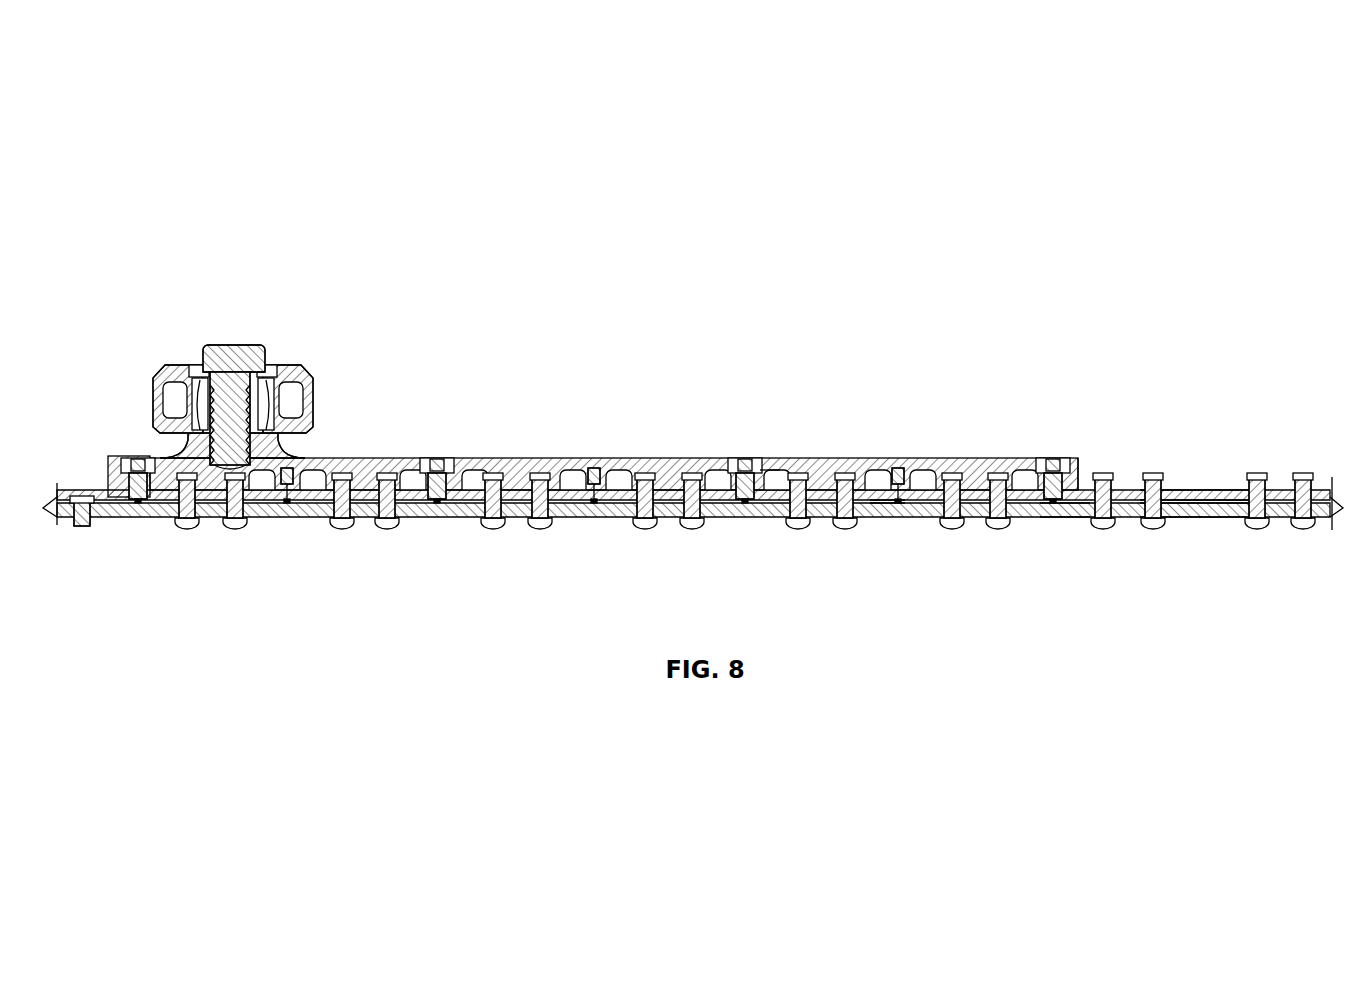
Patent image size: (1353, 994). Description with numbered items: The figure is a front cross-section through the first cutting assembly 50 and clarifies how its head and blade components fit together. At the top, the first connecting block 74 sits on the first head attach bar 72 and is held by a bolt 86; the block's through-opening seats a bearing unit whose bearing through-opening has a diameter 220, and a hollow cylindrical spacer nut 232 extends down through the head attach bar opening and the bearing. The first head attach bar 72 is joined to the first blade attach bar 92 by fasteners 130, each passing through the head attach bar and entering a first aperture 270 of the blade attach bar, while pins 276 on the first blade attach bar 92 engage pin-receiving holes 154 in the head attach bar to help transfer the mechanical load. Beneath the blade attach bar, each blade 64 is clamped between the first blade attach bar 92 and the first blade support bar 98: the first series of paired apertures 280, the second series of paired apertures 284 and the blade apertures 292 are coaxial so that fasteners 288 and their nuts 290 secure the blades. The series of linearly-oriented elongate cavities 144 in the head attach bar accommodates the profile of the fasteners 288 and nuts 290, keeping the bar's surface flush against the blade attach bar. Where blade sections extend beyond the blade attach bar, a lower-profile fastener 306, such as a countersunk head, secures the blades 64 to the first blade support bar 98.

The first cutting assembly 50 is at (1018, 330).
The blade 64 is at (455, 518).
The first head attach bar 72 is at (952, 458).
The first connecting block 74 is at (173, 365).
The bolt 86 is at (238, 345).
The first blade attach bar 92 is at (1207, 500).
The first blade support bar 98 is at (1052, 522).
The fastener 130 is at (440, 458).
The linearly-oriented elongate cavity 144 is at (668, 458).
The pin-receiving hole 154 is at (592, 458).
The diameter 220 is at (278, 405).
The hollow cylindrical spacer nut 232 is at (212, 448).
The first aperture 270 is at (770, 458).
The pin 276 is at (886, 520).
The first series of paired apertures 280 is at (1012, 458).
The second series of paired apertures 284 is at (1168, 522).
The fastener 288 is at (388, 528).
The nut 290 is at (520, 458).
The linearly-oriented blade apertures 292 is at (1172, 492).
The lower-profile fastener 306 is at (80, 528).